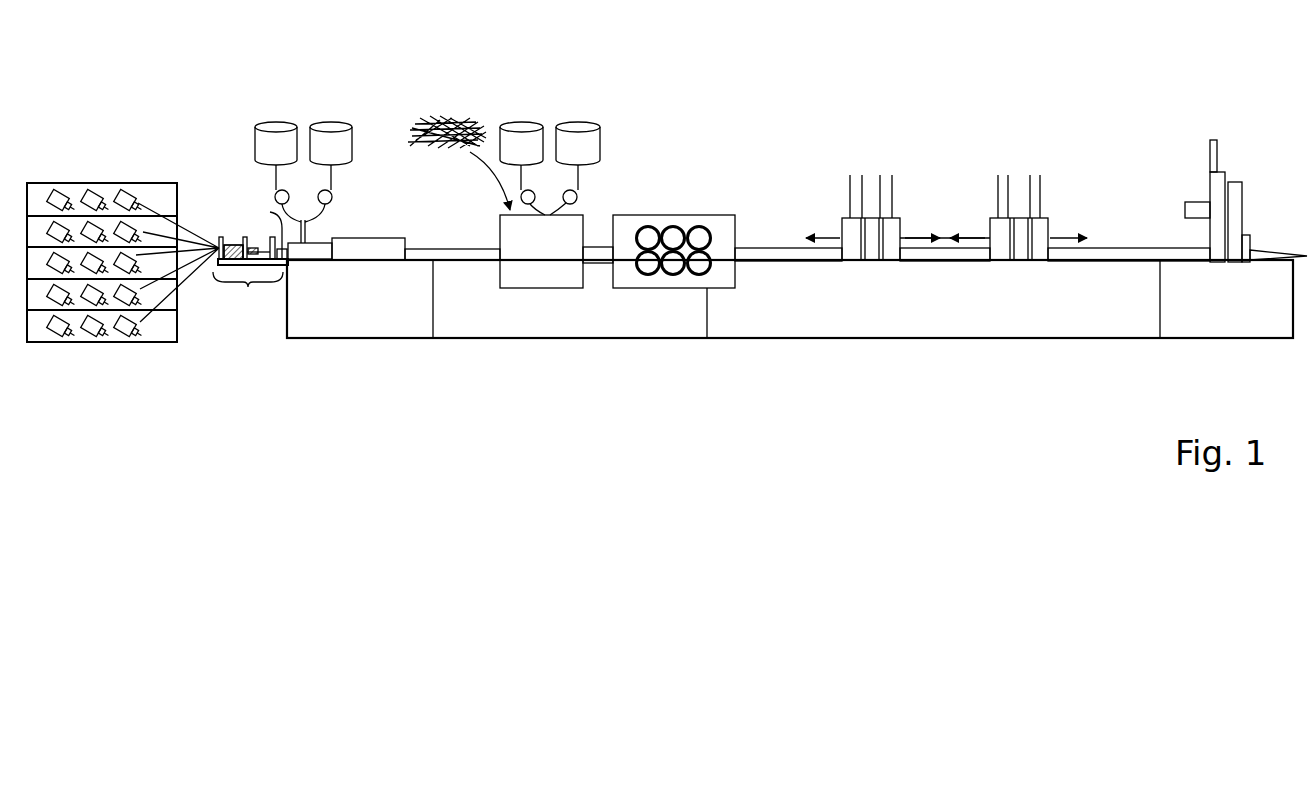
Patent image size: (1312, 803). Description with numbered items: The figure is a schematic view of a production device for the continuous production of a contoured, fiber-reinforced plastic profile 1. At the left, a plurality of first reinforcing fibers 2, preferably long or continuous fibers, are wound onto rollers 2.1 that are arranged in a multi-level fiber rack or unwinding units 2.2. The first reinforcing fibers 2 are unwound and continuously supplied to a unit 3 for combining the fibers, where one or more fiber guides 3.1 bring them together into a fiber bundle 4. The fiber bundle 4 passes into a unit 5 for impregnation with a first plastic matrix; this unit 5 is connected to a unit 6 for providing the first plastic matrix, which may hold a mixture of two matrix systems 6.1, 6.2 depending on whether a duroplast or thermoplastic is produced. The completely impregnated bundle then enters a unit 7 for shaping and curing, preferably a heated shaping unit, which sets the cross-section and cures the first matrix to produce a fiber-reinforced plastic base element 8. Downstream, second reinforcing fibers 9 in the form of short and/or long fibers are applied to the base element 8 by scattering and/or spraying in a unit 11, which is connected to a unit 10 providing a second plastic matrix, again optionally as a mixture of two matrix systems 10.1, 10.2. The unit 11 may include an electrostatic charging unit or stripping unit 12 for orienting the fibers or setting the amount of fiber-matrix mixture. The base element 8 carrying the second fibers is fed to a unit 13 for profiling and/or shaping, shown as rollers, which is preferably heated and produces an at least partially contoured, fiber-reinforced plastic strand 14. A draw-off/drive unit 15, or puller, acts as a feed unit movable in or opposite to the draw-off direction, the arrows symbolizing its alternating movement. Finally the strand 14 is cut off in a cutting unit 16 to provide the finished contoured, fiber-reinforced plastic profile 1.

The contoured, fiber-reinforced plastic profile 1 is at (1270, 250).
The first reinforcing fibers 2 is at (216, 246).
The rollers 2.1 is at (122, 195).
The multi-level fiber rack or unwinding units 2.2 is at (101, 352).
The unit for combining the reinforcing fibers 3 is at (250, 275).
The fiber guides 3.1 is at (245, 237).
The fiber bundle 4 is at (273, 238).
The unit for impregnating the fiber bundle 5 is at (322, 243).
The unit for providing the first plastic matrix 6 is at (307, 121).
The first matrix system 6.1 is at (275, 122).
The second matrix system 6.2 is at (338, 122).
The unit for shaping and curing 7 is at (362, 245).
The fiber-reinforced plastic base element 8 is at (433, 248).
The second reinforcing fibers 9 is at (451, 108).
The unit for providing a second plastic matrix 10 is at (559, 115).
The first matrix system 10.1 is at (520, 122).
The second matrix system 10.2 is at (583, 122).
The unit for applying the second reinforcing fibers 11 is at (570, 230).
The electrostatic charging unit or stripping unit 12 is at (525, 243).
The unit for profiling and/or shaping 13 is at (718, 222).
The contoured, fiber-reinforced plastic strand 14 is at (776, 247).
The draw-off/drive unit 15 is at (1000, 235).
The cutting unit 16 is at (1215, 186).